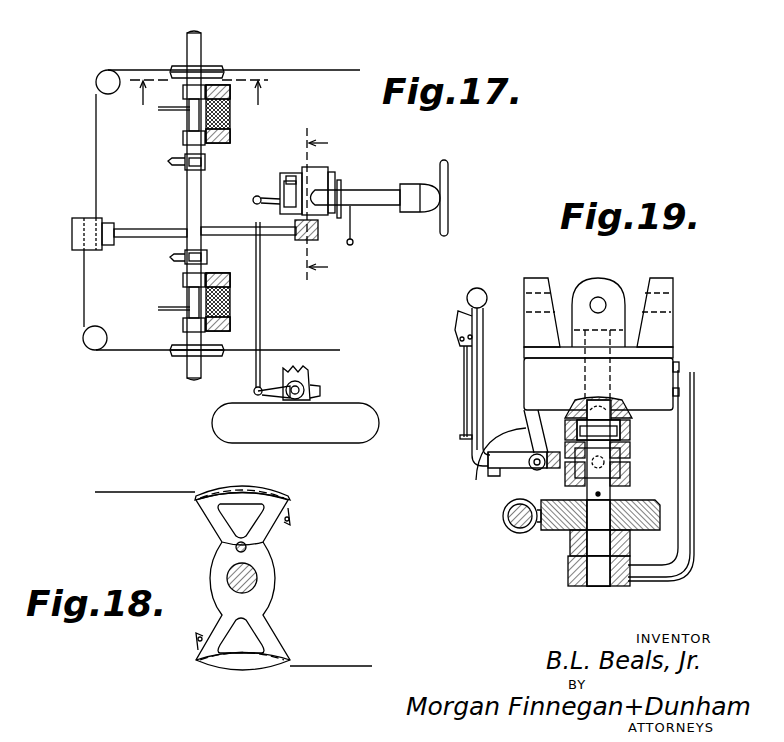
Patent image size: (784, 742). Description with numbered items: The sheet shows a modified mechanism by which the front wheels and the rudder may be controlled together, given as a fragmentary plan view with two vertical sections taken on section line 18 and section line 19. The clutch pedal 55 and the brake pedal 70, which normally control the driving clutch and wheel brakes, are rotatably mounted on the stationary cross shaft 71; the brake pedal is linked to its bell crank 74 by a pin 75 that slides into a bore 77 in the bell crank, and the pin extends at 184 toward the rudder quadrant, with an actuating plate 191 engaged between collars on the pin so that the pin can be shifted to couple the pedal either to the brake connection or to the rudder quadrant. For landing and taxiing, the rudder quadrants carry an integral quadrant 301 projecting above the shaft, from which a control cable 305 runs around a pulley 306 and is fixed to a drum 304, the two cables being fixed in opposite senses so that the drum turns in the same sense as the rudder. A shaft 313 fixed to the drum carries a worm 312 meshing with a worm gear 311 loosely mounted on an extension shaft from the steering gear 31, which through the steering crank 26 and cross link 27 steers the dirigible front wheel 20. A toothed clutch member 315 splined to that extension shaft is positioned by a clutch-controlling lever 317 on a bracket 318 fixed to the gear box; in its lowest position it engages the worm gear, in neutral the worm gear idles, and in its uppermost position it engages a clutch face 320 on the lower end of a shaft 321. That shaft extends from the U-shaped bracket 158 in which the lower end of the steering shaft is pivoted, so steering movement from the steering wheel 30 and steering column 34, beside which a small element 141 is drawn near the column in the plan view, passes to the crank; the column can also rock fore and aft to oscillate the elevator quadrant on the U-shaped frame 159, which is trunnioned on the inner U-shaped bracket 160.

In FIG. 17, the section line 18— 18 is at (200, 102).
In FIG. 17, the section line 19— 19 is at (330, 204).
In FIG. 17, the front wheel 20 is at (349, 403).
In FIG. 17, the steering crank 26 is at (256, 196).
In FIG. 19, the steering crank 26 is at (572, 541).
In FIG. 17, the cross link 27 is at (262, 323).
In FIG. 17, the steering wheel 30 is at (448, 178).
In FIG. 19, the steering gear 31 is at (640, 382).
In FIG. 17, the steering column 34 is at (373, 191).
In FIG. 17, the clutch pedal 55 is at (232, 293).
In FIG. 17, the brake pedal 70 is at (230, 118).
In FIG. 17, the cross shaft 71 is at (194, 216).
In FIG. 17, the bell crank 74 is at (170, 161).
In FIG. 17, the pin 75 is at (218, 138).
In FIG. 17, the bore 77 is at (206, 162).
In FIG. 17, the pin 141 is at (343, 186).
In FIG. 19, the U-shaped bracket 158 is at (598, 280).
In FIG. 17, the U-shaped frame 159 is at (308, 170).
In FIG. 19, the U-shaped bracket 160 is at (534, 280).
In FIG. 18, the slidable pin 184 is at (247, 546).
In FIG. 17, the actuating plate 191 is at (168, 112).
In FIG. 17, the quadrant 301 is at (205, 66).
In FIG. 18, the quadrant 301 is at (278, 479).
In FIG. 17, the drum 304 is at (72, 231).
In FIG. 17, the control cable 305 is at (133, 69).
In FIG. 18, the control cable 305 is at (135, 491).
In FIG. 17, the pulley 306 is at (102, 77).
In FIG. 17, the worm gear 311 is at (282, 222).
In FIG. 19, the worm gear 311 is at (655, 517).
In FIG. 17, the worm 312 is at (300, 240).
In FIG. 19, the worm 312 is at (503, 516).
In FIG. 17, the shaft 313 is at (144, 229).
In FIG. 19, the toothed clutch member 315 is at (625, 462).
In FIG. 19, the clutch-controlling lever 317 is at (472, 387).
In FIG. 19, the bracket 318 is at (532, 418).
In FIG. 19, the clutch face 320 is at (632, 421).
In FIG. 19, the shaft 321 is at (595, 402).